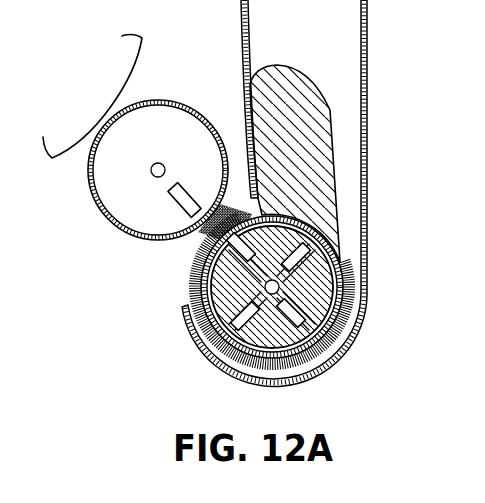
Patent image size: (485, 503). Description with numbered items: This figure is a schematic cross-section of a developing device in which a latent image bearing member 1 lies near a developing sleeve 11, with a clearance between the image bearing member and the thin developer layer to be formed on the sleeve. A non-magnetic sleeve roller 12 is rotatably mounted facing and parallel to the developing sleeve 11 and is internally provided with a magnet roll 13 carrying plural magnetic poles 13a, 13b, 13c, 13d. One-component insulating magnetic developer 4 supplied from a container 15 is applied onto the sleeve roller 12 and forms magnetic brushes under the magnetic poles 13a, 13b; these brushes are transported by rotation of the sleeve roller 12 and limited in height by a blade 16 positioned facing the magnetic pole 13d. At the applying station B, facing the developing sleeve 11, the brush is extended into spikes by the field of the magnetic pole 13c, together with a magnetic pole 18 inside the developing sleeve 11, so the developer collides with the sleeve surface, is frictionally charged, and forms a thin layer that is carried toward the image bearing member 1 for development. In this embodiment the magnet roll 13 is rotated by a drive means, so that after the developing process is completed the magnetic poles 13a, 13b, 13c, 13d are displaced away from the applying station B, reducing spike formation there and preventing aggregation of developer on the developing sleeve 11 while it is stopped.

The latent image bearing member 1 is at (136, 53).
The one-component insulating magnetic developer 4 is at (308, 97).
The developing sleeve 11 is at (105, 215).
The sleeve roller 12 is at (336, 241).
The magnet roll 13 is at (330, 322).
The magnetic pole 13a is at (263, 323).
The magnetic pole 13b is at (306, 302).
The magnetic pole 13c is at (283, 251).
The magnetic pole 13d is at (238, 267).
The container 15 is at (368, 42).
The blade 16 is at (241, 145).
The magnetic pole 18 is at (188, 190).
The applying station B is at (192, 241).